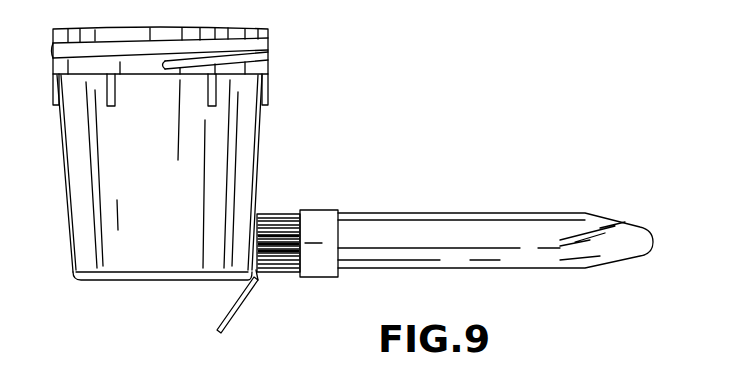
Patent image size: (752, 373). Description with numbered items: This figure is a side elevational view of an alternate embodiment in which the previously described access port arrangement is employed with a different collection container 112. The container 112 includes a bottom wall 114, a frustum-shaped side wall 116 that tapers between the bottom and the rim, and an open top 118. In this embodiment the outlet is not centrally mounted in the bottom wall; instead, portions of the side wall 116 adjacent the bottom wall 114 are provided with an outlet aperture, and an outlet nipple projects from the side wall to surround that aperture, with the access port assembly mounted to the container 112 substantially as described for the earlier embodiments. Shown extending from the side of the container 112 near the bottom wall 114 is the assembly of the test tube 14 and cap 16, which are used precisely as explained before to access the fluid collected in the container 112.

The test tube 14 is at (527, 213).
The cap 16 is at (322, 209).
The container 112 is at (215, 170).
The bottom wall 114 is at (92, 283).
The frustum-shaped side wall 116 is at (158, 179).
The open top 118 is at (268, 27).